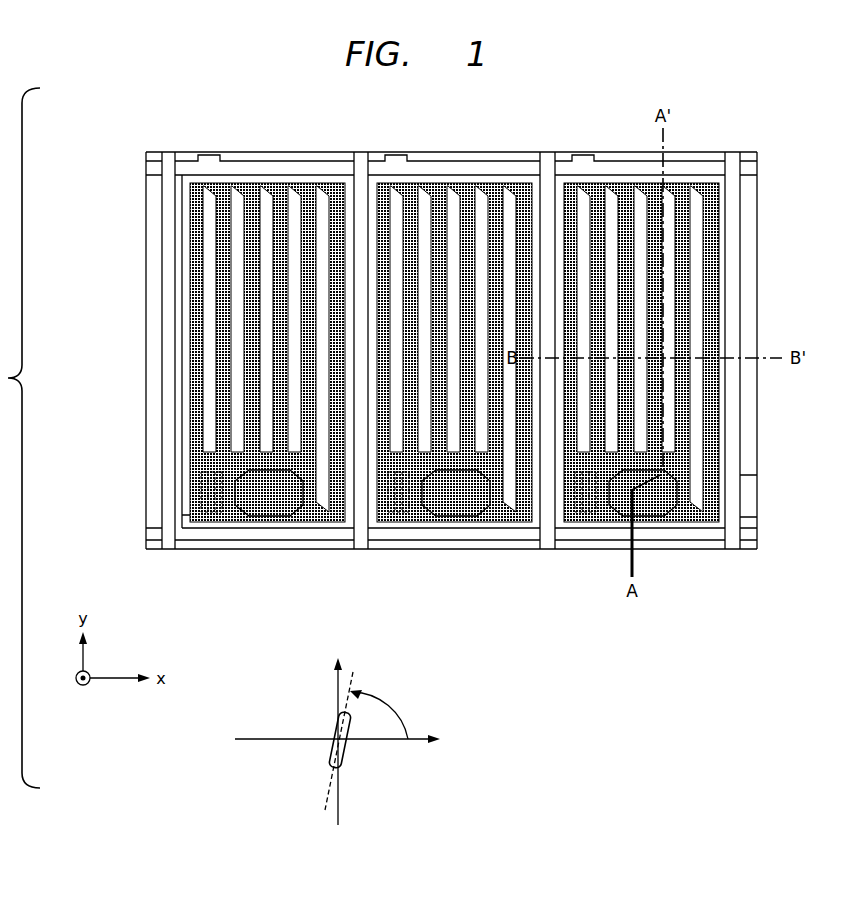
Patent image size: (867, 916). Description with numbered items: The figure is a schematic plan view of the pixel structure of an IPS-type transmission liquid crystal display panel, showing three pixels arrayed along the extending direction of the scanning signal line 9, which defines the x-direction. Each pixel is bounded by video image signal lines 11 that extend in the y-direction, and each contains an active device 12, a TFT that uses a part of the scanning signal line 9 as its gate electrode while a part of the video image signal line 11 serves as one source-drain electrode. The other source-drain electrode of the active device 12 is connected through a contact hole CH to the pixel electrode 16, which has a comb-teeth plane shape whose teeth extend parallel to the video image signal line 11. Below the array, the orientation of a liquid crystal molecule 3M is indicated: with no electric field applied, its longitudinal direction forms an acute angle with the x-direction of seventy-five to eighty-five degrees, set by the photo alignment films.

The scanning signal line 9 is at (472, 168).
The video image signal line 11 is at (732, 175).
The active device 12 is at (586, 505).
The pixel electrode 16 is at (718, 273).
The contact hole CH is at (654, 500).
The liquid crystal molecule 3M is at (330, 757).